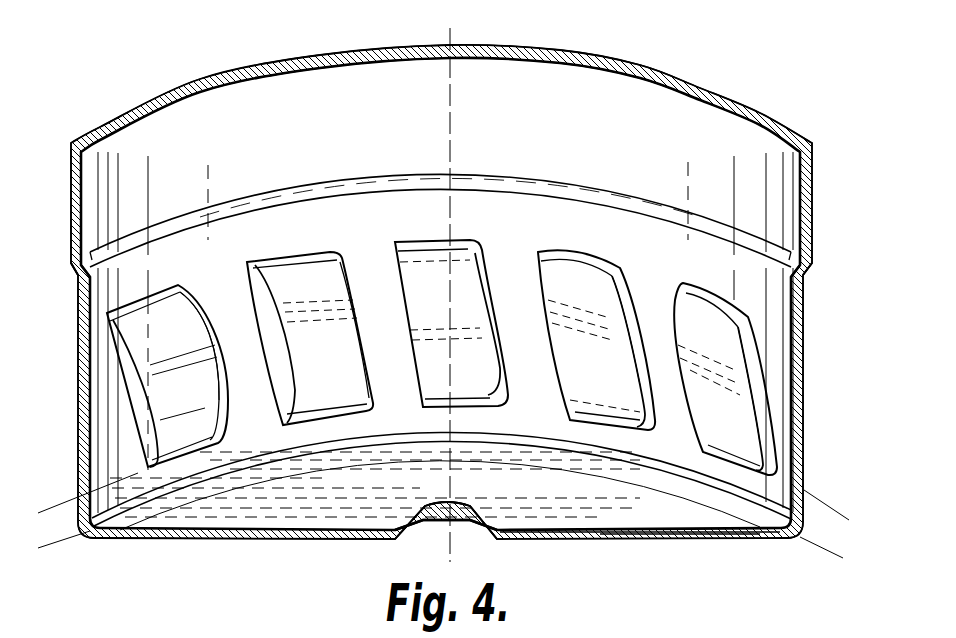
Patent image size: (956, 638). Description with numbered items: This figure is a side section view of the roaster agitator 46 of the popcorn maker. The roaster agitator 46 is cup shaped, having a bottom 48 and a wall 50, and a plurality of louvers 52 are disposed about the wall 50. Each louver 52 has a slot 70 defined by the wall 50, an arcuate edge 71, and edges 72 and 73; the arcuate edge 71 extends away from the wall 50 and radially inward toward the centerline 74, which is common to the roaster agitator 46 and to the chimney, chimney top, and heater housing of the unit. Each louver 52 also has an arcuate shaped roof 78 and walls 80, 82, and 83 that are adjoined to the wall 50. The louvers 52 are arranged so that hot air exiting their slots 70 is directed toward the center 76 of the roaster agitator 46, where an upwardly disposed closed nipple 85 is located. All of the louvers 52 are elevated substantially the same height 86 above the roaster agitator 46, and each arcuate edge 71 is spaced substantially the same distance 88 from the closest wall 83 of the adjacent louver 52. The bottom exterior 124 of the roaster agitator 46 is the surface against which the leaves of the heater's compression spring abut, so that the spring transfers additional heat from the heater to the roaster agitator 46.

The roaster agitator 46 is at (669, 69).
The wall 50 is at (786, 250).
The wall of louver 80 is at (576, 252).
The wall of louver 83 is at (226, 305).
The arcuate shaped roof 78 is at (438, 296).
The slot 70 is at (315, 250).
The arcuate edge 71 is at (290, 253).
The edge 72 is at (275, 323).
The louvers 52 is at (105, 440).
The edge 73 is at (150, 467).
The wall of louver 82 is at (205, 447).
The bottom 48 is at (646, 503).
The bottom exterior 124 is at (638, 490).
The center 76 is at (447, 503).
The closed nipple 85 is at (450, 505).
The centerline 74 is at (450, 560).
The distance 88 is at (545, 347).
The height 86 is at (52, 478).